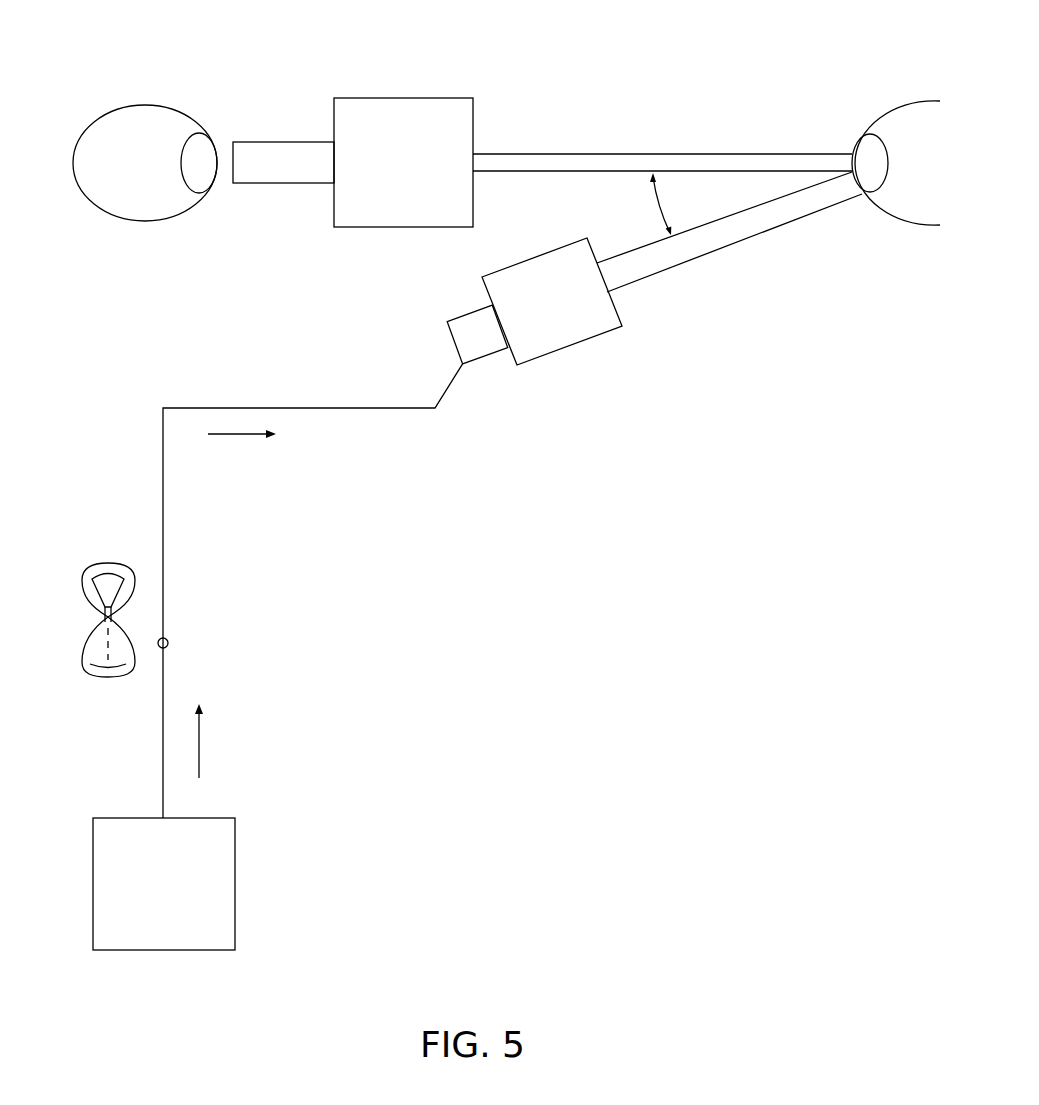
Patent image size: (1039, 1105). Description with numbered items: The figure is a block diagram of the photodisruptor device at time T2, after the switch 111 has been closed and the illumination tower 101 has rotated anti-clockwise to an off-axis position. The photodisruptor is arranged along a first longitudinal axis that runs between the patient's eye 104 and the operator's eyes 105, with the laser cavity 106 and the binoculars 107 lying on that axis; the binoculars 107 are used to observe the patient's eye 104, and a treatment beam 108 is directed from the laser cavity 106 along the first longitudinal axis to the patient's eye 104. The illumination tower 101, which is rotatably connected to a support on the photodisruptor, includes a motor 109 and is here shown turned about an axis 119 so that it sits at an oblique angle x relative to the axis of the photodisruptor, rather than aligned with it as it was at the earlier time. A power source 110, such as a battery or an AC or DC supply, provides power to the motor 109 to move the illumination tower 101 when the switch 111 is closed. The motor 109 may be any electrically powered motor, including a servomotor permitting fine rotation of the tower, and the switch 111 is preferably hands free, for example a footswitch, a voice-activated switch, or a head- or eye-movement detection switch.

The illumination tower 101 is at (563, 352).
The patient's eye 104 is at (884, 116).
The operator's eyes 105 is at (138, 104).
The laser cavity 106 is at (257, 141).
The binoculars 107 is at (396, 228).
The treatment beam 108 is at (587, 153).
The motor 109 is at (488, 352).
The power source 110 is at (235, 878).
The switch 111 is at (169, 642).
The axis 119 is at (823, 200).
The time T2 is at (102, 620).
The oblique angle X x is at (643, 204).